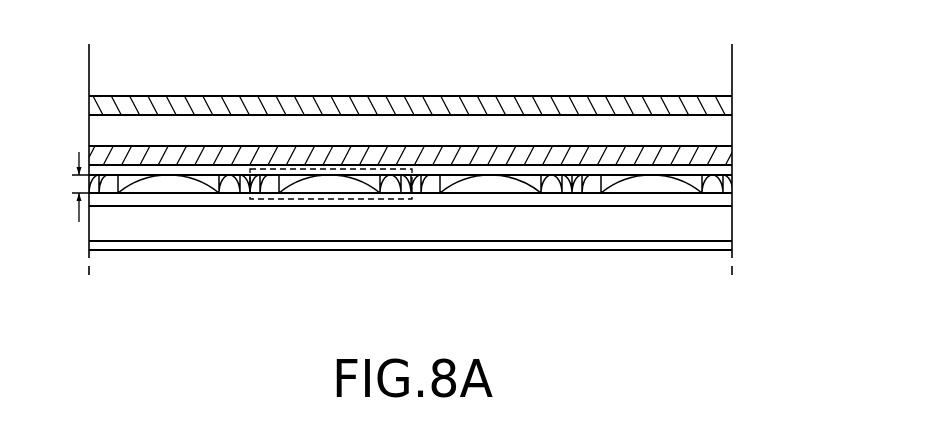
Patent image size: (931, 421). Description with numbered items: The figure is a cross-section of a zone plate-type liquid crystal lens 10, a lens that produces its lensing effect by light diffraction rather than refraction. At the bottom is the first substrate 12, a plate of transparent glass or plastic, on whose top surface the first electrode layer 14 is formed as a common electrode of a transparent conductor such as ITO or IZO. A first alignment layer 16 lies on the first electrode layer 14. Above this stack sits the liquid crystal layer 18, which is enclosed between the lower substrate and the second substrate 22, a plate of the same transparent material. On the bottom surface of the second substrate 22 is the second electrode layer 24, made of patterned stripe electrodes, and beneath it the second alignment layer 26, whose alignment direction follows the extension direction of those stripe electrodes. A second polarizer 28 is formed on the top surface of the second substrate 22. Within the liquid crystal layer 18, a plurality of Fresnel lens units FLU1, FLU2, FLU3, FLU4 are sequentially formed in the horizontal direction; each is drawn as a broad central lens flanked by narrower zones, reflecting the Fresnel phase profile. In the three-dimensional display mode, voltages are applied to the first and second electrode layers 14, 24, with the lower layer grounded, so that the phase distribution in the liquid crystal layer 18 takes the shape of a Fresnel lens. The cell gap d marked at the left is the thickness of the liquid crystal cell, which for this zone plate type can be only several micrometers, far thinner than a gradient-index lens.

The liquid crystal lens 10 is at (533, 47).
The first substrate 12 is at (560, 243).
The first electrode layer 14 is at (600, 227).
The first alignment layer 16 is at (727, 200).
The liquid crystal layer 18 is at (733, 182).
The second substrate 22 is at (726, 129).
The second electrode layer 24 is at (722, 157).
The second alignment layer 26 is at (727, 171).
The second polarizer 28 is at (725, 103).
The cell gap d is at (73, 187).
The Fresnel lens unit FLU1 is at (172, 184).
The Fresnel lens unit FLU2 is at (333, 184).
The Fresnel lens unit FLU3 is at (493, 184).
The Fresnel lens unit FLU4 is at (654, 184).